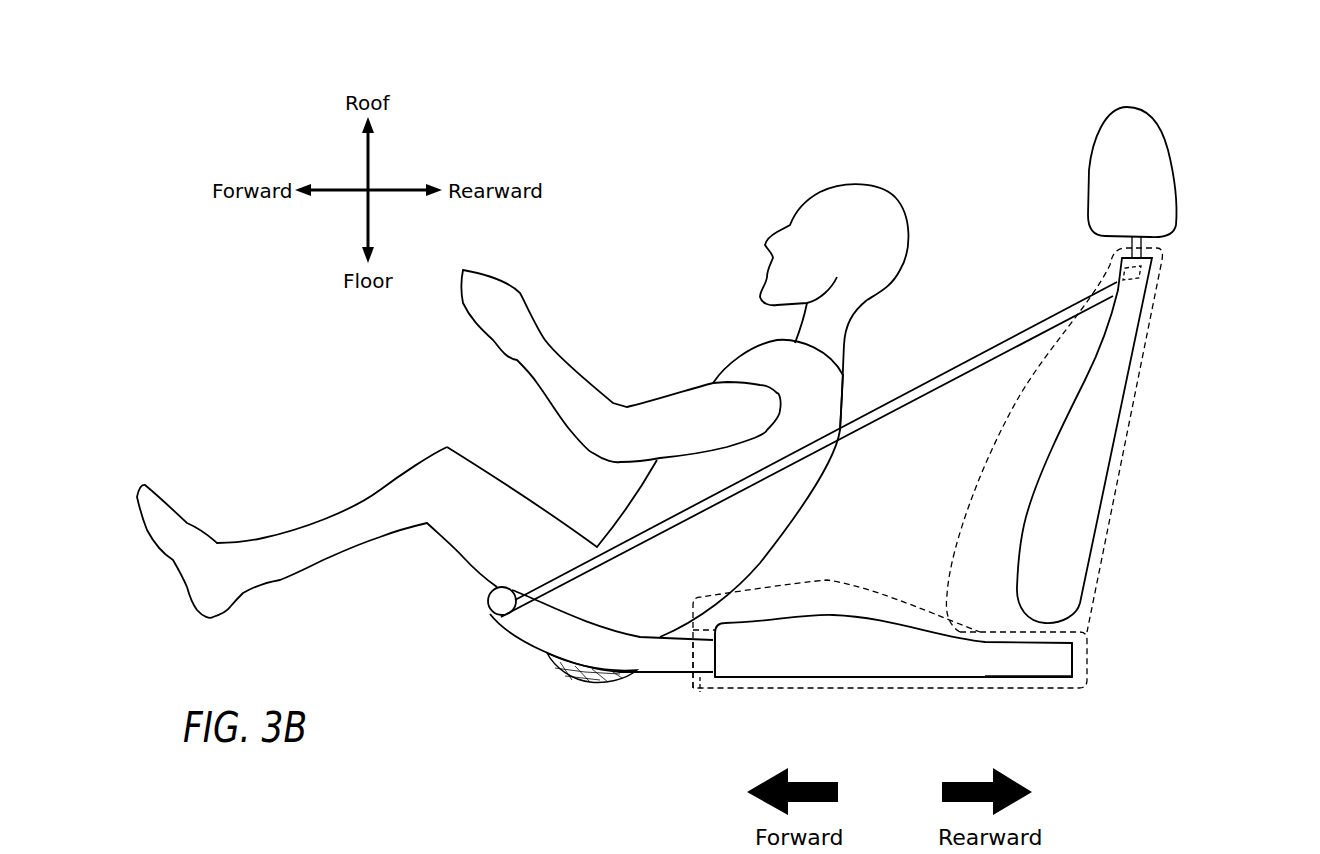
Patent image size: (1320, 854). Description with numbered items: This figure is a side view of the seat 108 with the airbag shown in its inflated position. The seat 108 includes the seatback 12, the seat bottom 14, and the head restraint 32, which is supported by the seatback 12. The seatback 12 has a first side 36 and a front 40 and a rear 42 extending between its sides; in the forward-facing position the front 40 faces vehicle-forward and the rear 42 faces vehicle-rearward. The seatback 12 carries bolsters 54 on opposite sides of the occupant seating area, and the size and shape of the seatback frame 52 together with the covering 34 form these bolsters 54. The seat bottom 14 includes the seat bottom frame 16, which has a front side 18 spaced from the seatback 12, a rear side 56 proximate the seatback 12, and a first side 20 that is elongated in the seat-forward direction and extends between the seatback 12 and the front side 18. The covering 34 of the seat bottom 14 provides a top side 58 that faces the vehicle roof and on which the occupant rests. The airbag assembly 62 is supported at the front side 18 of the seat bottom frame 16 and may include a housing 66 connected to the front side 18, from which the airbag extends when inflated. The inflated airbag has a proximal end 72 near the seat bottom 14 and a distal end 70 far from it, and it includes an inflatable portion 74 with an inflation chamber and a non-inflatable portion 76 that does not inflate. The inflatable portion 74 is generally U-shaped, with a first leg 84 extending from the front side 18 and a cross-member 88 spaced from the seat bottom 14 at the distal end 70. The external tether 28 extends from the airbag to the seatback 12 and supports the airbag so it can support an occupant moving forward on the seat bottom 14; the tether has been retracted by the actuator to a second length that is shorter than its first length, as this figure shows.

The seatback 12 is at (1180, 297).
The seat bottom 14 is at (1045, 704).
The seat bottom frame 16 is at (895, 678).
The front side 18 is at (658, 638).
The first side 20 is at (865, 678).
The external tether 28 is at (985, 350).
The head restraint 32 is at (1168, 162).
The covering 34 is at (1097, 280).
The first side 36 is at (1143, 357).
The front 40 is at (967, 500).
The rear 42 is at (1135, 397).
The seatback frame 52 is at (1110, 450).
The bolsters 54 is at (990, 447).
The rear side 56 is at (1074, 663).
The top side 58 is at (837, 582).
The airbag assembly 62 is at (700, 692).
The housing 66 is at (693, 690).
The distal end 70 is at (480, 594).
The proximal end 72 is at (706, 653).
The inflatable portion 74 is at (675, 658).
The non-inflatable portion 76 is at (577, 680).
The first leg 84 is at (532, 623).
The cross-member 88 is at (490, 587).
The seat 108 is at (1150, 76).